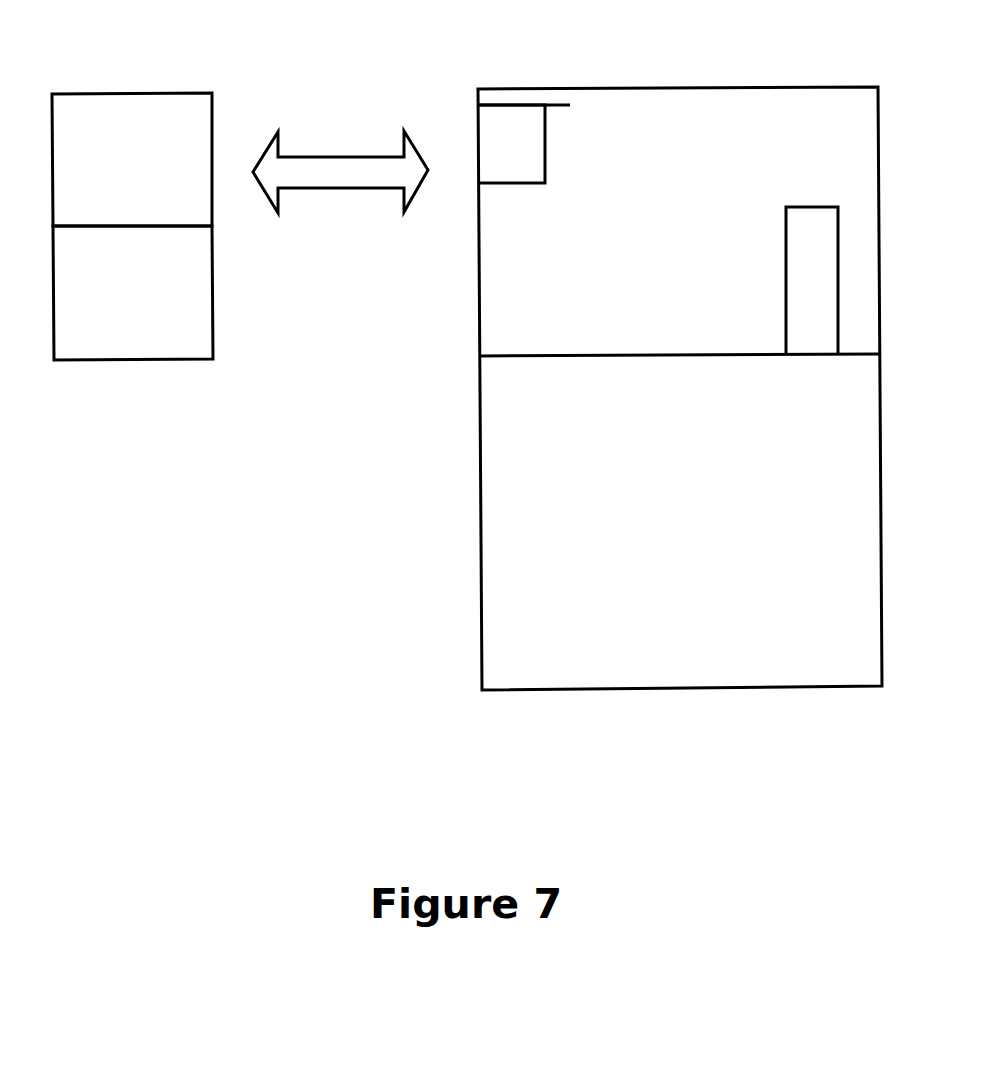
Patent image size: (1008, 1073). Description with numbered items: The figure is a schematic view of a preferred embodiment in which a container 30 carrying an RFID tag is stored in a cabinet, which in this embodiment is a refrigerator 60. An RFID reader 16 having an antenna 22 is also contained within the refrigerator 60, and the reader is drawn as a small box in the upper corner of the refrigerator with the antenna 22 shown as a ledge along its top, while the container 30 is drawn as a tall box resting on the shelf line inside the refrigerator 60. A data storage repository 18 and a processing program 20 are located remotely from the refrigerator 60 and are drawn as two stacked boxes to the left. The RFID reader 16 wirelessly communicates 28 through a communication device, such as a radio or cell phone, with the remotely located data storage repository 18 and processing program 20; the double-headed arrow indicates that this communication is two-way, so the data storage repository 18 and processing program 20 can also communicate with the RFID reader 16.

The RFID reader 16 is at (545, 143).
The data storage repository 18 is at (118, 174).
The processing program 20 is at (118, 296).
The antenna 22 is at (558, 102).
The wireless communication 28 is at (329, 157).
The container 30 is at (786, 273).
The refrigerator 60 is at (481, 504).